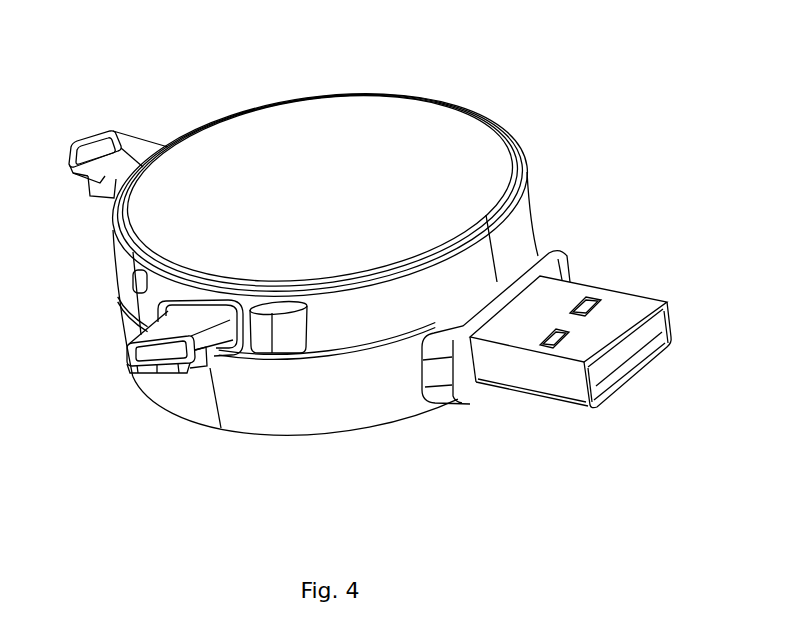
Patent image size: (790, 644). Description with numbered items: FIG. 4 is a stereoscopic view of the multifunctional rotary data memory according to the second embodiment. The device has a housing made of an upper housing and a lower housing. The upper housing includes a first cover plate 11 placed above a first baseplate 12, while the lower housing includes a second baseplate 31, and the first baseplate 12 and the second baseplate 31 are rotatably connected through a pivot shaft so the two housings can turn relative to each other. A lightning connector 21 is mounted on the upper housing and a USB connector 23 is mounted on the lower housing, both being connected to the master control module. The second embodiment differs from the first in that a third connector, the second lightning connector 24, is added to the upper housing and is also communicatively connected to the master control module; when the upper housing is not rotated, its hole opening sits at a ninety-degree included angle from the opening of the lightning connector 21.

The first cover plate 11 is at (307, 170).
The first baseplate 12 is at (507, 234).
The lightning connector 21 is at (177, 347).
The USB connector 23 is at (545, 390).
The second lightning connector 24 is at (137, 150).
The second baseplate 31 is at (357, 388).